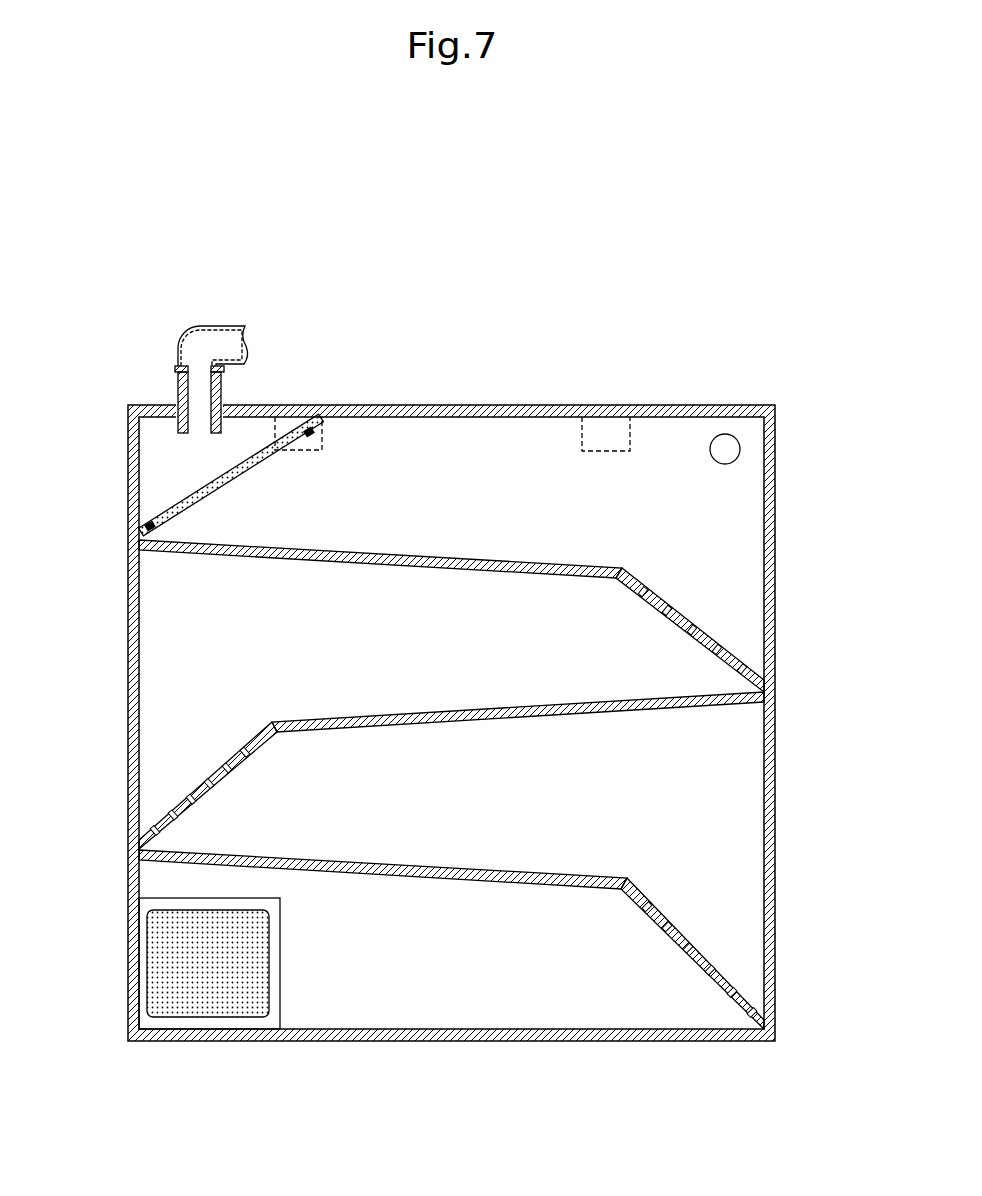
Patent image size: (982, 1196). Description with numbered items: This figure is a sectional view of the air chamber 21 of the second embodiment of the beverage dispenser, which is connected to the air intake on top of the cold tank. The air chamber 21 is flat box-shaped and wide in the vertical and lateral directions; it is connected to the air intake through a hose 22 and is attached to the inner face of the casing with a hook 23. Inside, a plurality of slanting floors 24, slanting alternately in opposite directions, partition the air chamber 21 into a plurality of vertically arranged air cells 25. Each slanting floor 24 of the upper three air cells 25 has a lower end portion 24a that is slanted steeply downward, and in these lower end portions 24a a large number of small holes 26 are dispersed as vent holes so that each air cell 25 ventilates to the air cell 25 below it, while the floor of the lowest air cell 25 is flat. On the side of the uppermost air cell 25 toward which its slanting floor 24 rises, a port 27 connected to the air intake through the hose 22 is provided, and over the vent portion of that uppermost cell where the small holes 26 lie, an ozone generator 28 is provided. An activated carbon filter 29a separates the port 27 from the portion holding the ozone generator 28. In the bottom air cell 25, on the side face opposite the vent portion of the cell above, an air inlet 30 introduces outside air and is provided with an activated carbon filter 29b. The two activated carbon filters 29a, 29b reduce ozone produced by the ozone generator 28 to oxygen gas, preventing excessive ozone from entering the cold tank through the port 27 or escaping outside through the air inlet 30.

The air chamber 21 is at (441, 404).
The hose 22 is at (196, 327).
The hook 23 is at (322, 443).
The slanting floor 24 is at (551, 873).
The lower end portion 24a is at (702, 630).
The air cell 25 is at (418, 494).
The small hole 26 is at (671, 606).
The port 27 is at (177, 398).
The ozone generator 28 is at (726, 433).
The activated carbon filter 29a is at (190, 496).
The activated carbon filter 29b is at (180, 985).
The air inlet 30 is at (269, 965).